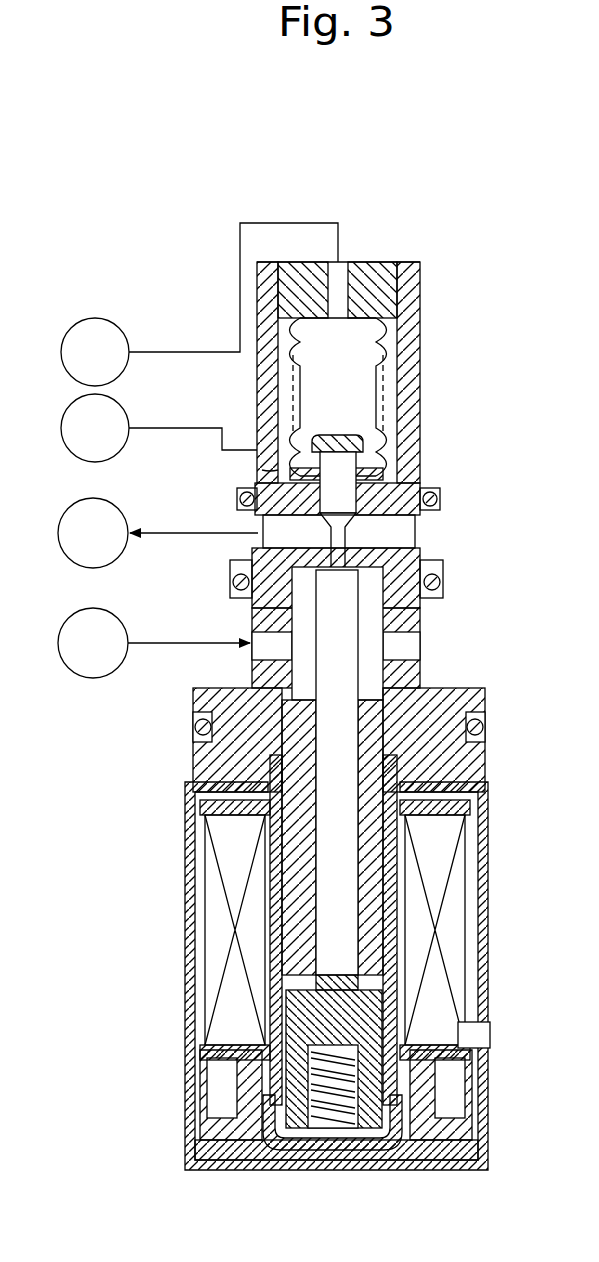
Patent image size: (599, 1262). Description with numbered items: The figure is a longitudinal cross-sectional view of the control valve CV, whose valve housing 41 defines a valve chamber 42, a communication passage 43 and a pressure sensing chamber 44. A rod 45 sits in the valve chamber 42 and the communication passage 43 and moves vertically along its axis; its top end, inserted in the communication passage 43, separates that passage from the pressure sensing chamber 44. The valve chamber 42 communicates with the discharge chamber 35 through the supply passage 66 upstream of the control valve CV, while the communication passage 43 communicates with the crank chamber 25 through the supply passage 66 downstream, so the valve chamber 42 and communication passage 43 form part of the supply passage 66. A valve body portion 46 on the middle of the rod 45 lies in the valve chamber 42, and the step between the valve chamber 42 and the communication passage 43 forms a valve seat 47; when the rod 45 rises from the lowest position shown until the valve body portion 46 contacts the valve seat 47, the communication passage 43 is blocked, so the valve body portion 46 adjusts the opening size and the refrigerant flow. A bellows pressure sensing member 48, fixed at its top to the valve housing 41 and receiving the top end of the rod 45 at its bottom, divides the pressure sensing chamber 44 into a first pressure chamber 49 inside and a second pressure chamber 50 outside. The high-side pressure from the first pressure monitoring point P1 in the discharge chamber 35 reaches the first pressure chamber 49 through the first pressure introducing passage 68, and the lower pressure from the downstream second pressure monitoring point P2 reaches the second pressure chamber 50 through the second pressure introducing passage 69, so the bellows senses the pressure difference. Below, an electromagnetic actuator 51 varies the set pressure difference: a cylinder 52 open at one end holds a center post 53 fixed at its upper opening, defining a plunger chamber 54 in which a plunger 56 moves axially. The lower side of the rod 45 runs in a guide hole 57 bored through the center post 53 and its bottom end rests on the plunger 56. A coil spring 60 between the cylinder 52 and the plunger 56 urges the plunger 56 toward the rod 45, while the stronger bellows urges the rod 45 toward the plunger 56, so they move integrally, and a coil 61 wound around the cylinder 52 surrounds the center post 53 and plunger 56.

The control valve CV is at (392, 262).
The first pressure monitoring point P1 is at (95, 318).
The second pressure monitoring point P2 is at (90, 462).
The crank chamber 25 is at (112, 553).
The discharge chamber 35 is at (112, 663).
The valve housing 41 is at (445, 565).
The valve chamber 42 is at (400, 640).
The communication passage 43 is at (352, 540).
The pressure sensing chamber 44 is at (400, 362).
The rod 45 is at (343, 678).
The valve body portion 46 is at (385, 630).
The valve seat 47 is at (155, 535).
The pressure sensing member 48 is at (420, 428).
The first pressure chamber 49 is at (356, 373).
The second pressure chamber 50 is at (262, 470).
The electromagnetic actuator 51 is at (488, 827).
The cylinder 52 is at (405, 782).
The center post 53 is at (397, 712).
The plunger chamber 54 is at (365, 985).
The plunger 56 is at (380, 998).
The guide hole 57 is at (317, 822).
The coil spring 60 is at (318, 1128).
The coil 61 is at (455, 879).
The supply passage 66 is at (158, 643).
The first pressure introducing passage 68 is at (157, 350).
The second pressure introducing passage 69 is at (165, 427).